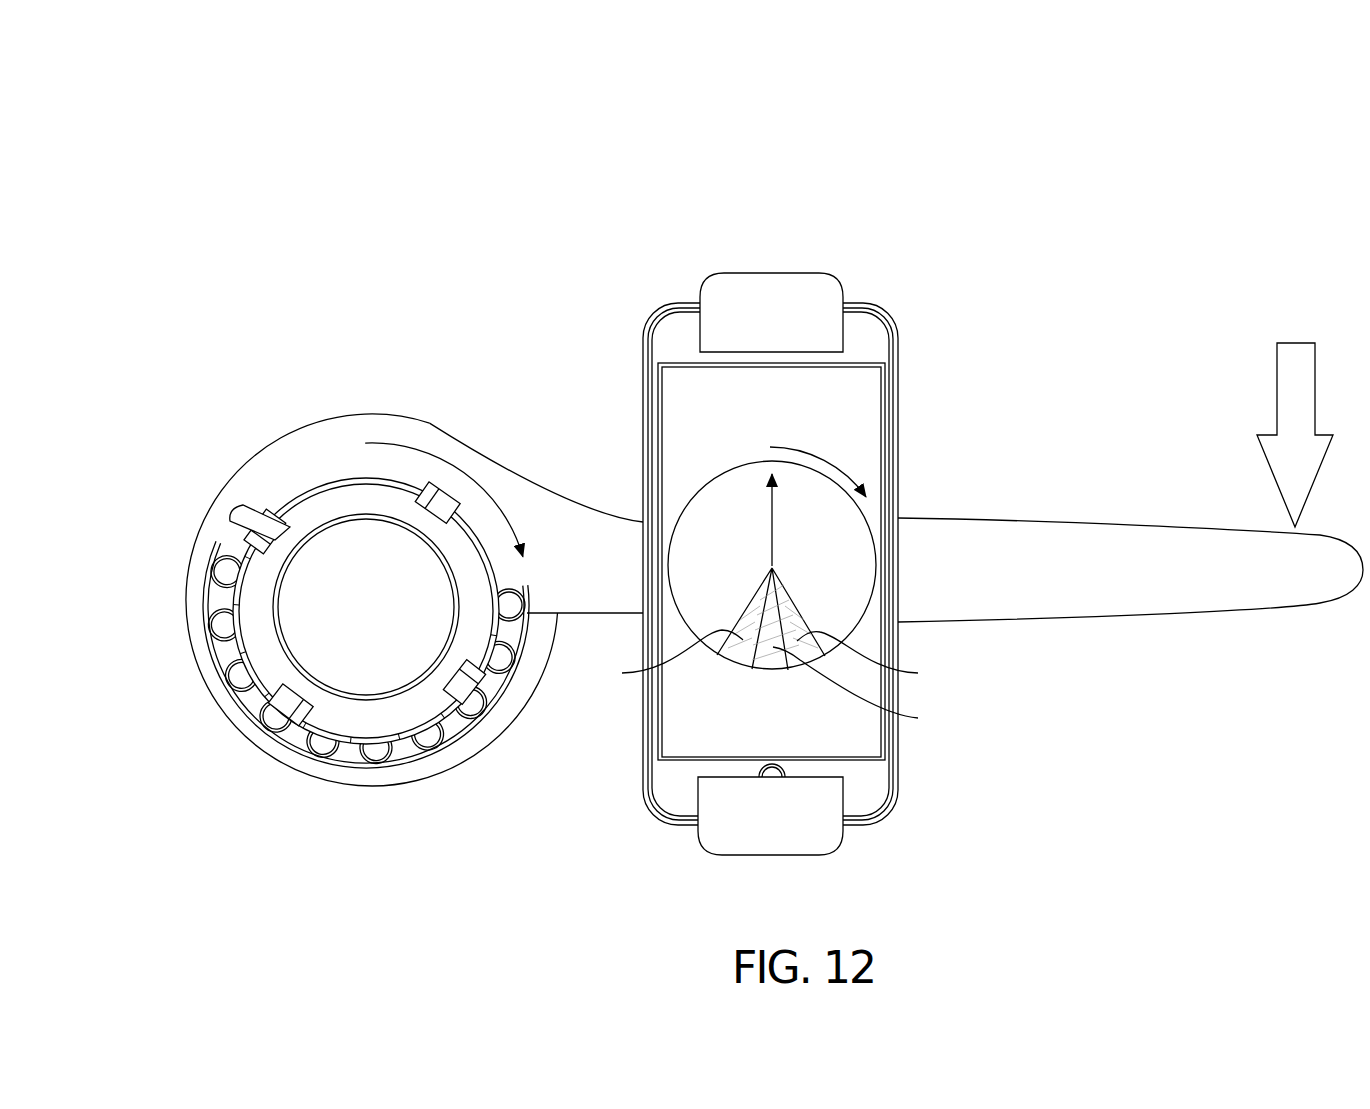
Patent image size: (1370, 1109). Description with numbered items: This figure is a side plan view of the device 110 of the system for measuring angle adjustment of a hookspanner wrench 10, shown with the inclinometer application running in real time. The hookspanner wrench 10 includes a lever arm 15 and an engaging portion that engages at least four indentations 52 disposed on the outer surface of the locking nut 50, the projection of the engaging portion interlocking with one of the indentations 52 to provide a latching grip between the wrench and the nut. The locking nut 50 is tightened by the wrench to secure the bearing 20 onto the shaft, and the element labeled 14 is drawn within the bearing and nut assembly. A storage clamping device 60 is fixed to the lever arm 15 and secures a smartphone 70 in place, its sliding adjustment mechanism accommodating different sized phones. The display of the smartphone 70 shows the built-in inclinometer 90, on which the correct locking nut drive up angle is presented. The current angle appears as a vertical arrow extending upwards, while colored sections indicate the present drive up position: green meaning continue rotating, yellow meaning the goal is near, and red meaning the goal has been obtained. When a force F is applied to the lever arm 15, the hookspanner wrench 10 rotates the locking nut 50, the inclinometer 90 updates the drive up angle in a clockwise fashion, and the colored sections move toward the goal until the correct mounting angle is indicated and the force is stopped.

The hookspanner wrench 10 is at (396, 406).
The ring 14 is at (318, 480).
The lever arm 15 is at (1227, 580).
The bearing 20 is at (440, 785).
The locking nut 50 is at (273, 526).
The indentations 52 is at (274, 528).
The storage clamping device 60 is at (842, 270).
The smartphone 70 is at (889, 305).
The inclinometer 90 is at (822, 530).
The device 110 is at (1232, 168).